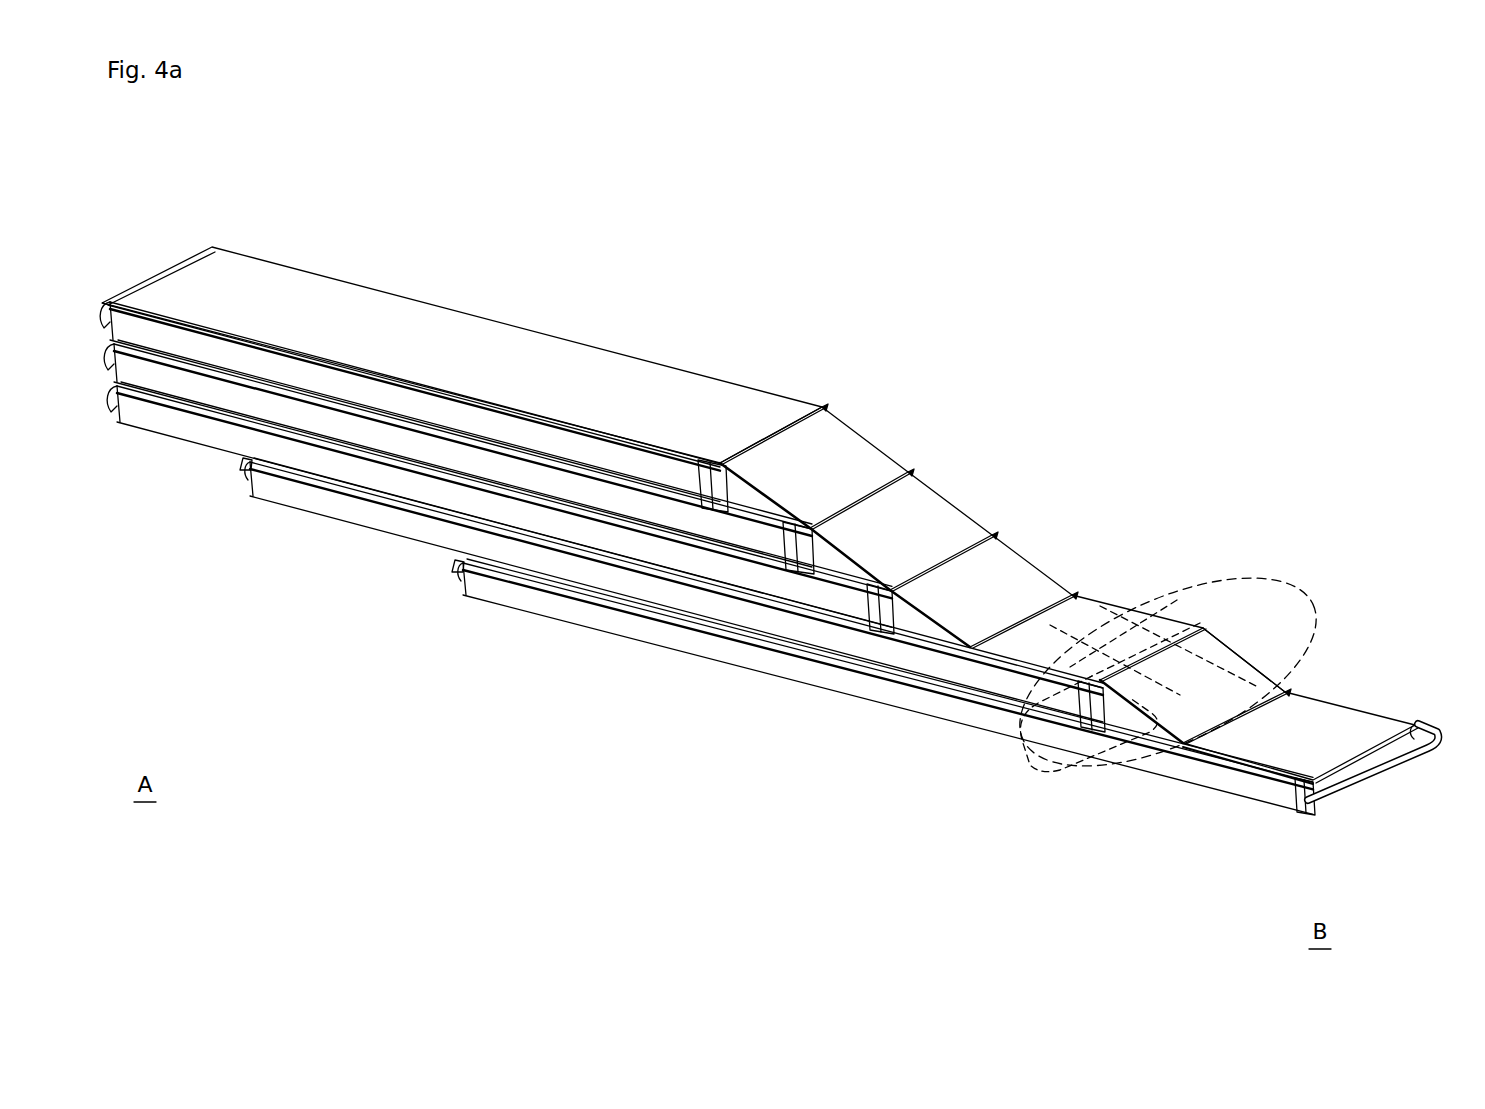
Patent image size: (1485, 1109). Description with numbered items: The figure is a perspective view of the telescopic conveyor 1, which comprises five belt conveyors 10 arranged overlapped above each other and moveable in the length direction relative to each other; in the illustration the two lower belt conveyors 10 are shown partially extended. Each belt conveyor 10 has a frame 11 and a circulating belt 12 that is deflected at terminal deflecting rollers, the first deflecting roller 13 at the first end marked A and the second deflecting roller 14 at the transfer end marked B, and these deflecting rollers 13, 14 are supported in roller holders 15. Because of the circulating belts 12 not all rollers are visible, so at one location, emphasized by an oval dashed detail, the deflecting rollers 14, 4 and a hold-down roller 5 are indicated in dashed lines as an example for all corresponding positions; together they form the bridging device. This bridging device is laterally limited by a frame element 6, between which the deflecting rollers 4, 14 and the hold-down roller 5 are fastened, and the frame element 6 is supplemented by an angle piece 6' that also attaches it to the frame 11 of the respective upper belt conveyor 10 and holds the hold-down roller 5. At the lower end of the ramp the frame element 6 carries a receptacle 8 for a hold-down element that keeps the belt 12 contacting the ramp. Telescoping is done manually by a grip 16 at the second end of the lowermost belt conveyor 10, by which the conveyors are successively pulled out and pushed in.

The telescopic conveyor 1 is at (485, 245).
The deflecting roller 4 is at (1215, 648).
The hold-down roller 5 is at (1085, 730).
The frame element 6 is at (1003, 652).
The angle piece 6' is at (865, 703).
The receptacle 8 is at (906, 470).
The belt conveyor 10 is at (338, 522).
The frame 11 is at (571, 440).
The circulating belt 12 is at (718, 395).
The first deflecting roller 13 is at (244, 462).
The second deflecting roller 14 is at (1186, 635).
The roller holder 15 is at (107, 387).
The grip 16 is at (1390, 776).